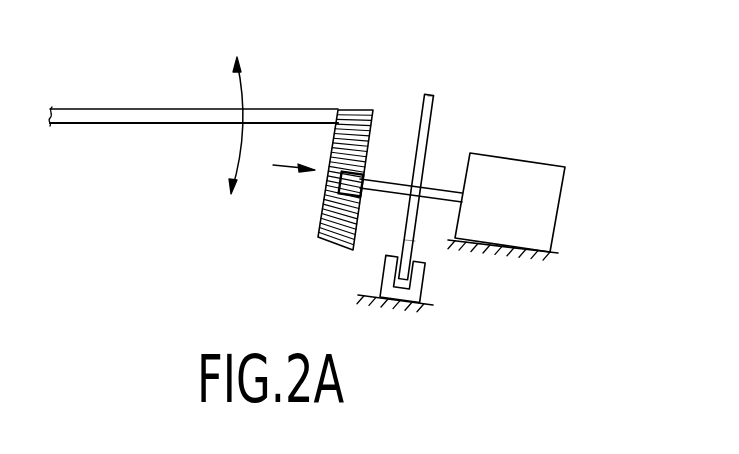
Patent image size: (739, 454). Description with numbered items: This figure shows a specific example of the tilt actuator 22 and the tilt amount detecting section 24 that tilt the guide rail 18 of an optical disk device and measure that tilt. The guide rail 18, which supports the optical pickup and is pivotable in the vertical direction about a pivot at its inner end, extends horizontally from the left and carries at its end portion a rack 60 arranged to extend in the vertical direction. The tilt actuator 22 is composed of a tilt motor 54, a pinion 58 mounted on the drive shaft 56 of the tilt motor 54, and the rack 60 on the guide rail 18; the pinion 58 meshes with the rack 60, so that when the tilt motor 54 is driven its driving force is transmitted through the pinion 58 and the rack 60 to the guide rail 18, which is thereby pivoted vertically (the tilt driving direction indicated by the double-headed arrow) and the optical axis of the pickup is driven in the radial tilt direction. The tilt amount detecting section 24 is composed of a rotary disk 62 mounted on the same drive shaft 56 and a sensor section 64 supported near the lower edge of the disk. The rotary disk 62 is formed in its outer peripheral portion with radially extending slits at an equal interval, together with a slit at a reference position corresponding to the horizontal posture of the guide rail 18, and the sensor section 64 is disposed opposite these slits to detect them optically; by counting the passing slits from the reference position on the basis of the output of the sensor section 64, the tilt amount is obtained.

The guide rail 18 is at (117, 108).
The tilt actuator 22 is at (388, 120).
The tilt amount detecting section 24 is at (448, 120).
The tilt motor 54 is at (510, 153).
The drive shaft 56 is at (445, 186).
The pinion 58 is at (333, 190).
The rack 60 is at (332, 248).
The rotary disk 62 is at (415, 237).
The sensor section 64 is at (418, 286).